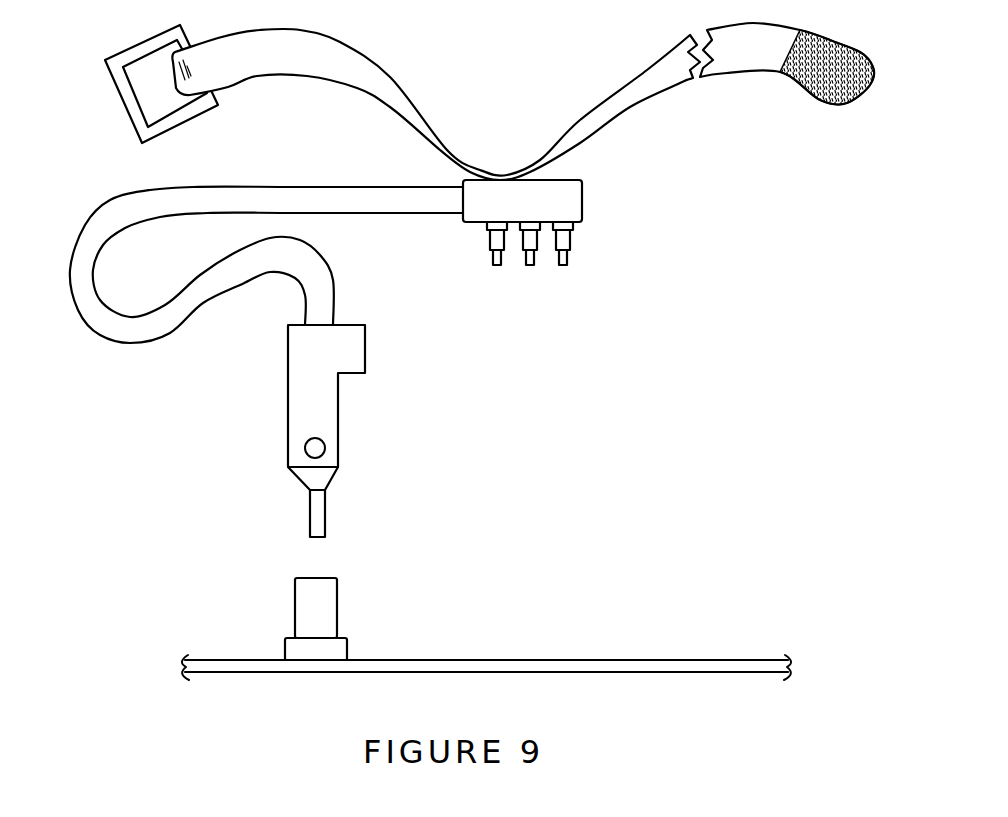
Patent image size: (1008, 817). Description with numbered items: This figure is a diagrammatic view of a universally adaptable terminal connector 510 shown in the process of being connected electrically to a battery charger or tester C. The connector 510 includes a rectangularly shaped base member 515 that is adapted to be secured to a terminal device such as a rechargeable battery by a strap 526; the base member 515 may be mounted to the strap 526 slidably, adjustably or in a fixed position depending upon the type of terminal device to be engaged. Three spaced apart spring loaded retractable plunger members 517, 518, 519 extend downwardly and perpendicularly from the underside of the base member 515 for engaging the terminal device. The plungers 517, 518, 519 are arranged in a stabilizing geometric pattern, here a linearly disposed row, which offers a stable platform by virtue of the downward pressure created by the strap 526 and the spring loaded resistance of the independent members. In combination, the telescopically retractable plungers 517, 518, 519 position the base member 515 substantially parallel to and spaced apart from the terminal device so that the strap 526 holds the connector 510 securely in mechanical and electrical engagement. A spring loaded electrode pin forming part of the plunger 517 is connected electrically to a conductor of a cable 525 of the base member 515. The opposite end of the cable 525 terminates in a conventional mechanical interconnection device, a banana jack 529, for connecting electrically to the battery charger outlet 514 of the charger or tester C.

The universally adaptable terminal connector 510 is at (678, 418).
The battery charger outlet 514 is at (337, 593).
The base member 515 is at (572, 205).
The spring loaded retractable plunger member 517 is at (570, 240).
The spring loaded retractable plunger member 518 is at (546, 265).
The spring loaded retractable plunger member 519 is at (490, 247).
The cable 525 is at (157, 343).
The strap 526 is at (657, 73).
The banana jack 529 is at (288, 395).
The battery charger or tester C is at (492, 660).